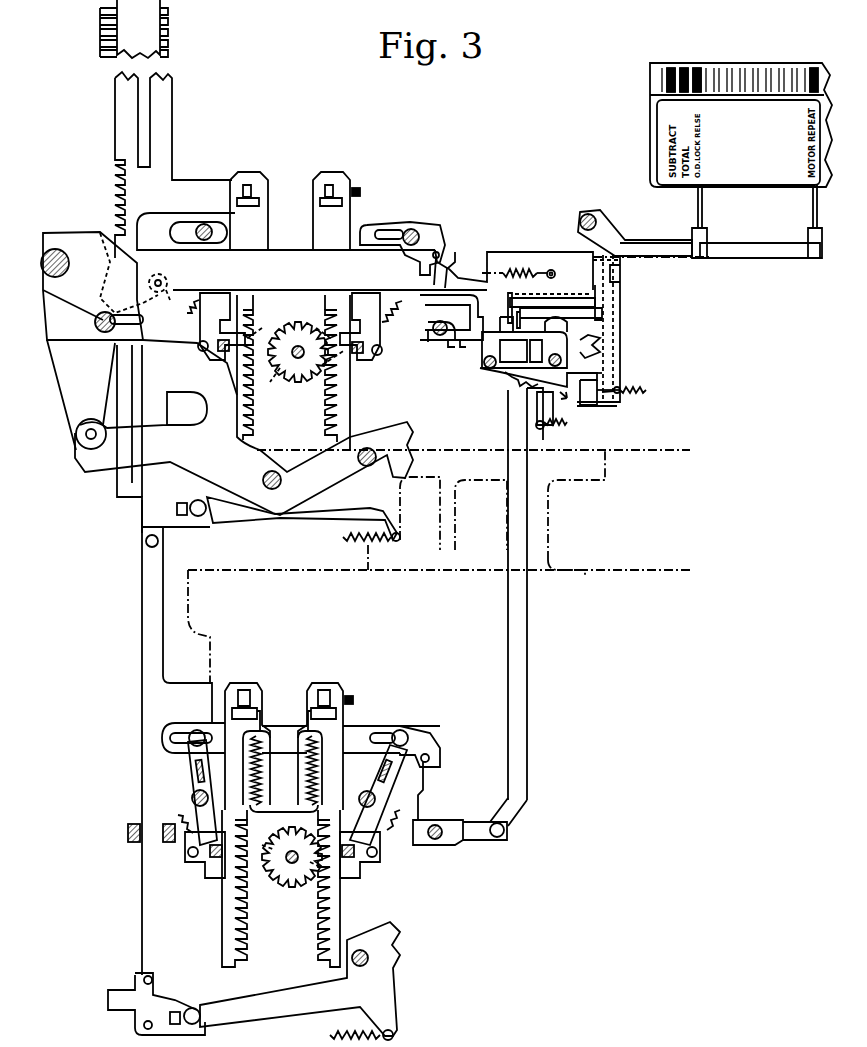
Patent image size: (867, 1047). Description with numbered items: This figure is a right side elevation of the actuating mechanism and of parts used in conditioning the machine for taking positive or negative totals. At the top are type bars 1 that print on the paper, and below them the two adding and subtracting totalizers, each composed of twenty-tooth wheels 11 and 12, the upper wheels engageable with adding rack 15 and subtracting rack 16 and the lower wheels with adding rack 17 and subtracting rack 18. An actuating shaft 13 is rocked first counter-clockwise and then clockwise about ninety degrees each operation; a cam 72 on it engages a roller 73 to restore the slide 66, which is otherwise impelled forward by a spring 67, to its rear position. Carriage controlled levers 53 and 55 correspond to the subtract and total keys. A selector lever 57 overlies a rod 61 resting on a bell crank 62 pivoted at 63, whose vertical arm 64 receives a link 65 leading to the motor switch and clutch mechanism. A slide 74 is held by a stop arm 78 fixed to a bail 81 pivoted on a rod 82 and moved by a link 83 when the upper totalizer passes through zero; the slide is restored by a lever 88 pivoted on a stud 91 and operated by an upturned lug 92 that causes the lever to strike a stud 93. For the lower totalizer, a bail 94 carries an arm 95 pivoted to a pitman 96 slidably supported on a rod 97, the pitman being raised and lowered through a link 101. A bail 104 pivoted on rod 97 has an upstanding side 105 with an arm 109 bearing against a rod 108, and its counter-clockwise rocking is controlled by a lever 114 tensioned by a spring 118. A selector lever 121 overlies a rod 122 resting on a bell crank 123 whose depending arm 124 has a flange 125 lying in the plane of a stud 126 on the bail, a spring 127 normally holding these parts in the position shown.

The type bars 1 is at (164, 101).
The actuating shaft 13 is at (57, 253).
The cam 72 is at (107, 237).
The roller 73 is at (186, 313).
The link 83 is at (368, 225).
The slide 66 is at (486, 253).
The spring 67 is at (520, 262).
The pivot 63 is at (594, 215).
The carriage controlled lever 53 is at (671, 66).
The carriage controlled lever 55 is at (685, 66).
The selector lever 121 is at (698, 66).
The selector lever 57 is at (814, 66).
The rod 122 is at (703, 208).
The rod 61 is at (812, 210).
The bell crank 123 is at (682, 258).
The bell crank 62 is at (755, 258).
The stud 91 is at (585, 305).
The stud 93 is at (506, 305).
The lever 88 is at (572, 297).
The upturned lug 92 is at (612, 300).
The stop arm 78 is at (473, 330).
The bail 81 is at (402, 308).
The rod 82 is at (432, 328).
The link 65 is at (605, 335).
The vertical arm 64 is at (620, 343).
The depending arm 124 is at (622, 366).
The flange 125 is at (622, 388).
The spring 127 is at (639, 402).
The bail 104 is at (582, 404).
The stud 126 is at (568, 400).
The spring 118 is at (549, 419).
The lever 114 is at (527, 410).
The upstanding side 105 is at (527, 398).
The arm 109 is at (512, 378).
The rod 108 is at (485, 370).
The slide 74 is at (482, 355).
The rod 97 is at (567, 383).
The subtracting rack 16 is at (250, 408).
The twenty-tooth wheels 11 is at (290, 375).
The adding rack 15 is at (339, 412).
The pitman 96 is at (526, 650).
The link 101 is at (357, 735).
The bail 94 is at (426, 800).
The arm 95 is at (482, 832).
The subtracting rack 18 is at (225, 905).
The twenty-tooth wheels 12 is at (286, 880).
The adding rack 17 is at (340, 898).